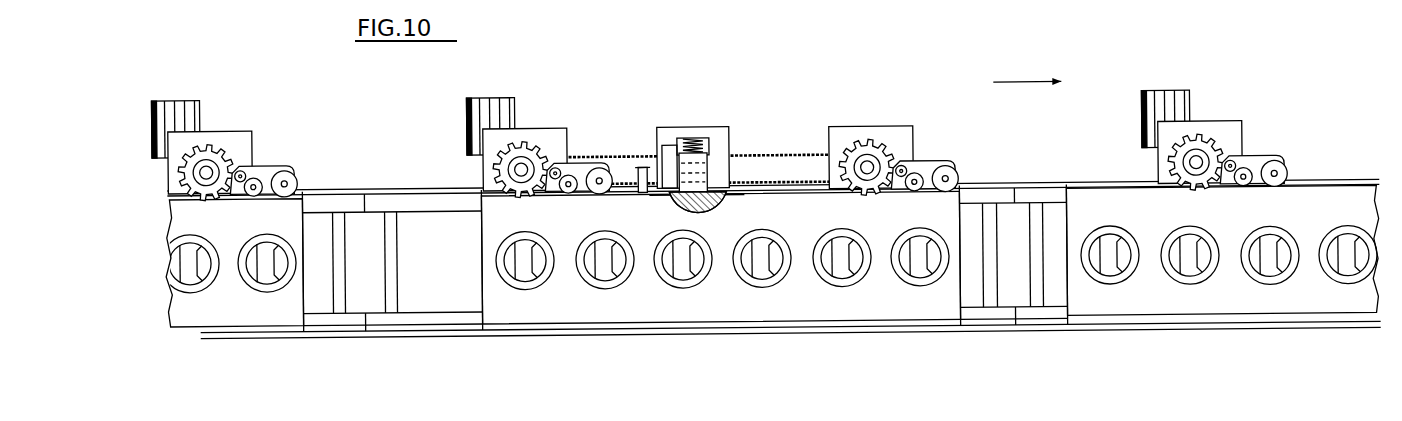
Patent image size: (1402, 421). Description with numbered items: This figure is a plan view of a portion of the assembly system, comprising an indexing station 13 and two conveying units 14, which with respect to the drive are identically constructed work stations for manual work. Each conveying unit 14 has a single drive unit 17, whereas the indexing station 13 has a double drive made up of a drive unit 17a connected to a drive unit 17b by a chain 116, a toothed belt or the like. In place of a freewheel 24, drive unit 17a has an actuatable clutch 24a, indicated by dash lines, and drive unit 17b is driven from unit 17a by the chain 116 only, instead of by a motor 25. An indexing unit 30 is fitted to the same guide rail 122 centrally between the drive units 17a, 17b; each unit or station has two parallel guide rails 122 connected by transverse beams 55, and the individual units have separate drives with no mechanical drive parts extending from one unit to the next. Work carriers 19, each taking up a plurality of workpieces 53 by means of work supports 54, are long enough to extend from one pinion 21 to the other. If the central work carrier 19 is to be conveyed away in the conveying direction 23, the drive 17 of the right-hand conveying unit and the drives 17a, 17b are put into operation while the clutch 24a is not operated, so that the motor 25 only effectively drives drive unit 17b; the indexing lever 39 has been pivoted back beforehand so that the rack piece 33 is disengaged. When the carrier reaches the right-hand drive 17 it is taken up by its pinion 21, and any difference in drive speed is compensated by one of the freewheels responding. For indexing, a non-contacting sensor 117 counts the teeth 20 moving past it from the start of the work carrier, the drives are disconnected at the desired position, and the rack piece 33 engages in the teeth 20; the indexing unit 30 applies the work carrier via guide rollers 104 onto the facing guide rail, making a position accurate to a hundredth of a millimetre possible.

The indexing station 13 is at (452, 181).
The conveying unit 14 is at (338, 177).
The drive unit 17 is at (293, 131).
The drive unit 17a is at (548, 107).
The drive unit 17b is at (898, 122).
The work carrier 19 is at (238, 309).
The teeth 20 is at (672, 204).
The pinion 21 is at (213, 161).
The conveying direction 23 is at (1020, 90).
The freewheel 24 is at (220, 164).
The actuatable clutch 24a is at (540, 162).
The motor 25 is at (492, 101).
The indexing unit 30 is at (678, 137).
The rack piece 33 is at (718, 194).
The indexing lever 39 is at (708, 163).
The workpiece 53 is at (525, 251).
The work support 54 is at (535, 286).
The transverse beam 55 is at (390, 251).
The guide roller 104 is at (477, 193).
The chain 116 is at (772, 159).
The sensor 117 is at (640, 171).
The guide rail 122 is at (428, 325).